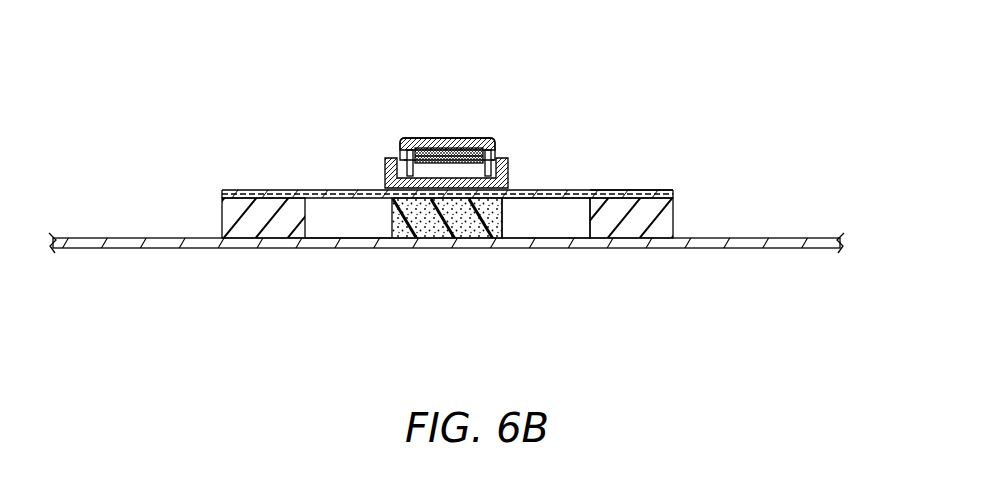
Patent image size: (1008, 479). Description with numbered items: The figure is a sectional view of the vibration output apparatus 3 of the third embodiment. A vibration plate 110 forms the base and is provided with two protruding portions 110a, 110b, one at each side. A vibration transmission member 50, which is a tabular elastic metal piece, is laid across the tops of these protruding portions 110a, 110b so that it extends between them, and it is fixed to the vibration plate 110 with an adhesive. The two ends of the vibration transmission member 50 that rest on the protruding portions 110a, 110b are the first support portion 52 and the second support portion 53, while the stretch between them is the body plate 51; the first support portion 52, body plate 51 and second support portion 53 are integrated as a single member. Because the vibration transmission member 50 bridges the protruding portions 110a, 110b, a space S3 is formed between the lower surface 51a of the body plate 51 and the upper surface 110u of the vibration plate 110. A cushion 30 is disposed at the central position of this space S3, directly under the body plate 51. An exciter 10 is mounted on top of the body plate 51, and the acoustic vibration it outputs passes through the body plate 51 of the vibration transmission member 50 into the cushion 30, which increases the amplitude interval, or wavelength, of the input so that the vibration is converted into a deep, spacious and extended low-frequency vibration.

The vibration output apparatus 3 is at (240, 90).
The exciter 10 is at (418, 128).
The cushion 30 is at (447, 238).
The vibration transmission member 50 is at (670, 171).
The body plate 51 is at (541, 188).
The lower surface of the body plate 51a is at (345, 204).
The first support portion 52 is at (267, 188).
The second support portion 53 is at (625, 188).
The vibration plate 110 is at (666, 249).
The protruding portion 110a is at (222, 210).
The protruding portion 110b is at (673, 212).
The upper surface of the vibration plate 110u is at (345, 234).
The space S3 is at (557, 229).